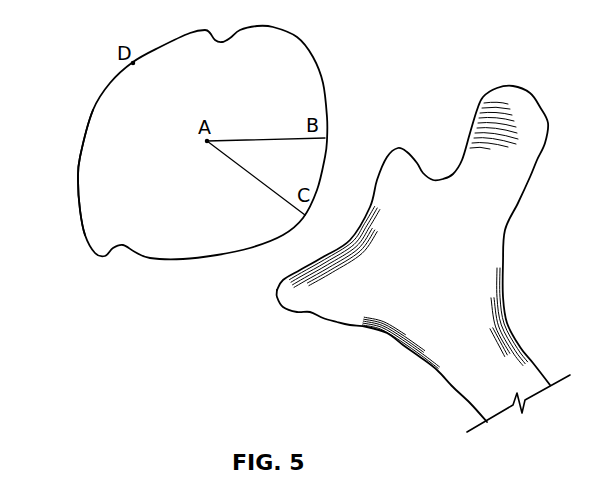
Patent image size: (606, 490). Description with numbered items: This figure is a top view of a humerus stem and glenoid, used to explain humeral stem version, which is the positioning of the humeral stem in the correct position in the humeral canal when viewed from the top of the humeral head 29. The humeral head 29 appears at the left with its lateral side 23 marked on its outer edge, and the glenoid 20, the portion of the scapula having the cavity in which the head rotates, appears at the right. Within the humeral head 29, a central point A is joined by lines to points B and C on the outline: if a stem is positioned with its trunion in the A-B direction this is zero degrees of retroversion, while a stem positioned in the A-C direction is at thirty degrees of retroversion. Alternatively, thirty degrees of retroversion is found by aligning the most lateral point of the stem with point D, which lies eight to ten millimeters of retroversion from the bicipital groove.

The glenoid 20 is at (354, 303).
The lateral side 23 is at (108, 85).
The humeral head 29 is at (78, 192).